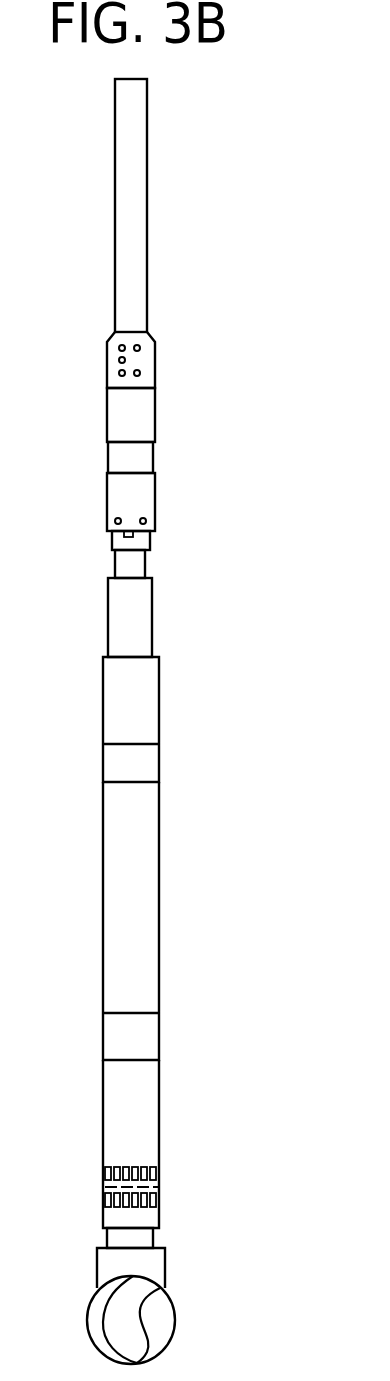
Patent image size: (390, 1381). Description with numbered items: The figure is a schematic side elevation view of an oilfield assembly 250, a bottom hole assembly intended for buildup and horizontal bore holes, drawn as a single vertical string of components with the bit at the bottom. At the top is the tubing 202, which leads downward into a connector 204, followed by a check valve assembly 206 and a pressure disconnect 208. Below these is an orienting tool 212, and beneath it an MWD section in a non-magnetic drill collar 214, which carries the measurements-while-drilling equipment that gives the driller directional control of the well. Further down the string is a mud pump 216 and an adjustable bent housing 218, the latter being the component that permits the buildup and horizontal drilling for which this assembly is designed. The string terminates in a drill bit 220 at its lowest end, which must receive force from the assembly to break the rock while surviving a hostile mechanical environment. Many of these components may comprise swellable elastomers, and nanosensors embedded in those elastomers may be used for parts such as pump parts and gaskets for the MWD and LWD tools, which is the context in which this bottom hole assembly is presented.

The oilfield assembly 250 is at (98, 176).
The tubing 202 is at (147, 204).
The connector 204 is at (155, 362).
The check valve assembly 206 is at (155, 415).
The pressure disconnect 208 is at (150, 538).
The orienting tool 212 is at (159, 700).
The MWD section in a non-magnetic drill collar 214 is at (160, 870).
The mud pump 216 is at (160, 1083).
The adjustable bent housing 218 is at (160, 1178).
The drill bit 220 is at (176, 1318).